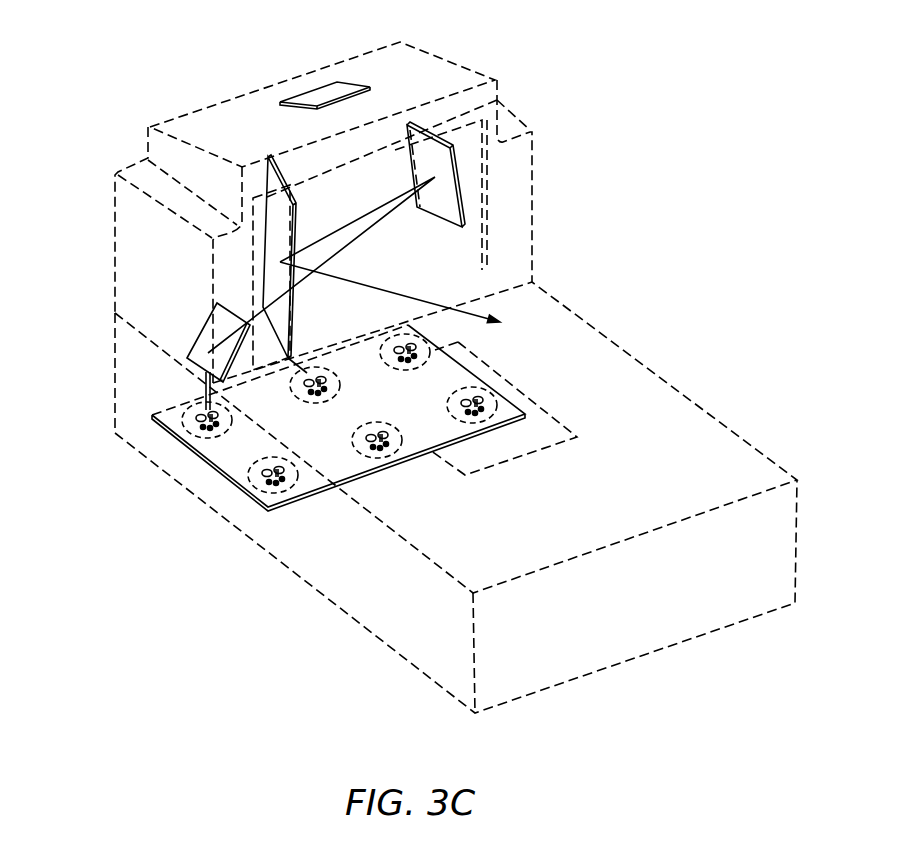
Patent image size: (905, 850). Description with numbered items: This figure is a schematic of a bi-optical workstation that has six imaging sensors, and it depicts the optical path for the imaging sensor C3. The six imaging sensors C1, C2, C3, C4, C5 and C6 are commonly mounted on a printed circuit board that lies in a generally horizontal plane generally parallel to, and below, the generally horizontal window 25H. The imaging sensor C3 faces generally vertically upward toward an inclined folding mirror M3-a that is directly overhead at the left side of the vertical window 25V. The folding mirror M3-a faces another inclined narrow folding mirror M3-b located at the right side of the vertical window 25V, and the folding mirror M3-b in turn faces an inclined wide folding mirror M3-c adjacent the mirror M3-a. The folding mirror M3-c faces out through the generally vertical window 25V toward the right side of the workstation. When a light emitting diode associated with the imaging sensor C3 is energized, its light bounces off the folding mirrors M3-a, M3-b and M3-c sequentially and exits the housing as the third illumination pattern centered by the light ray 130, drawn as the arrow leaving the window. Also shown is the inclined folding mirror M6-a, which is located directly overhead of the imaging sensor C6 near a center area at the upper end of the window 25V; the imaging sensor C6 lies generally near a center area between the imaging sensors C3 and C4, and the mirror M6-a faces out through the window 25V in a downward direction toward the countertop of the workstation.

The inclined folding mirror M6-a is at (318, 97).
The vertical window 25V is at (468, 163).
The inclined narrow folding mirror M3-b is at (447, 205).
The inclined wide folding mirror M3-c is at (280, 223).
The inclined folding mirror M3-a is at (222, 325).
The light ray 130 is at (470, 280).
The imaging sensor C4 is at (425, 355).
The imaging sensor C2 is at (492, 408).
The horizontal window 25H is at (533, 423).
The imaging sensor C3 is at (193, 408).
The imaging sensor C6 is at (297, 373).
The imaging sensor C1 is at (250, 480).
The imaging sensor C5 is at (365, 445).